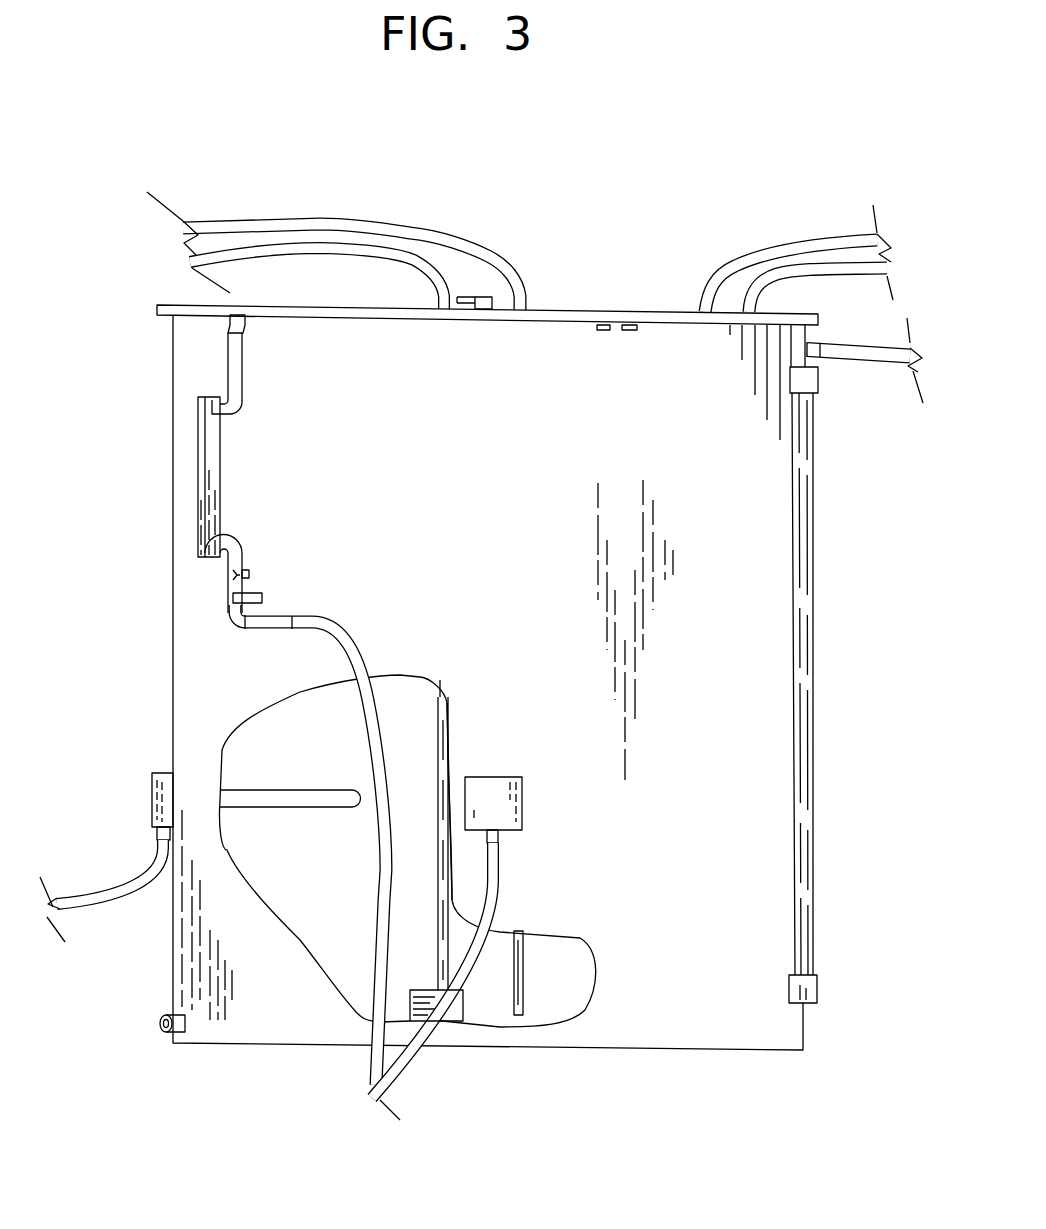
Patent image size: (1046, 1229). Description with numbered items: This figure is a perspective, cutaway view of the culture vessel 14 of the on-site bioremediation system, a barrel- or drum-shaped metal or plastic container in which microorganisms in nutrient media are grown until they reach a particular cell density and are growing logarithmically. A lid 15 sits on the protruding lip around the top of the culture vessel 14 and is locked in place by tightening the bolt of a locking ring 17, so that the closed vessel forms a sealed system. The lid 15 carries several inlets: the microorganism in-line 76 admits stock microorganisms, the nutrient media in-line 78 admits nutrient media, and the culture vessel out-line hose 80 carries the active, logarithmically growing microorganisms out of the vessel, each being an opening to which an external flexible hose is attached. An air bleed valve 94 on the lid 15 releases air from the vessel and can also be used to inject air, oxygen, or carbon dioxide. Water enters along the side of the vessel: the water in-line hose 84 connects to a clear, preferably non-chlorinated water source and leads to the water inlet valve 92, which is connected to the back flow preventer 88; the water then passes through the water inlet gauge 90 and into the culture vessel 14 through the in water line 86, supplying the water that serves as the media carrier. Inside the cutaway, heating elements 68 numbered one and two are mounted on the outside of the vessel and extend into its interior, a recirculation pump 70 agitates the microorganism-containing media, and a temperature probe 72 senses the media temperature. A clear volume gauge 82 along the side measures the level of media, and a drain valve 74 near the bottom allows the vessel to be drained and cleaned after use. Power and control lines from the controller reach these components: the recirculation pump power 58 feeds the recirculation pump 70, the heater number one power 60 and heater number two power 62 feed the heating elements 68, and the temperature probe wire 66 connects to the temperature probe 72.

The culture vessel 14 is at (702, 124).
The lid 15 is at (568, 311).
The locking ring 17 is at (602, 322).
The recirculation pump power 58 is at (318, 247).
The heater #1 power 60 is at (403, 1070).
The heater #2 power 62 is at (140, 865).
The temperature probe wire 66 is at (452, 240).
The heating elements 68 is at (165, 775).
The recirculation pump 70 is at (457, 1012).
The temperature probe 72 is at (520, 970).
The drain valve 74 is at (160, 1025).
The microorganism in-line 76 is at (715, 307).
The nutrient media in-line 78 is at (841, 268).
The culture vessel out-line hose 80 is at (862, 360).
The clear volume gauge 82 is at (808, 503).
The water in-line hose 84 is at (360, 1062).
The in water line 86 is at (235, 317).
The back flow preventer 88 is at (225, 578).
The water inlet gauge 90 is at (202, 430).
The water inlet valve 92 is at (233, 598).
The air bleed valve 94 is at (481, 298).